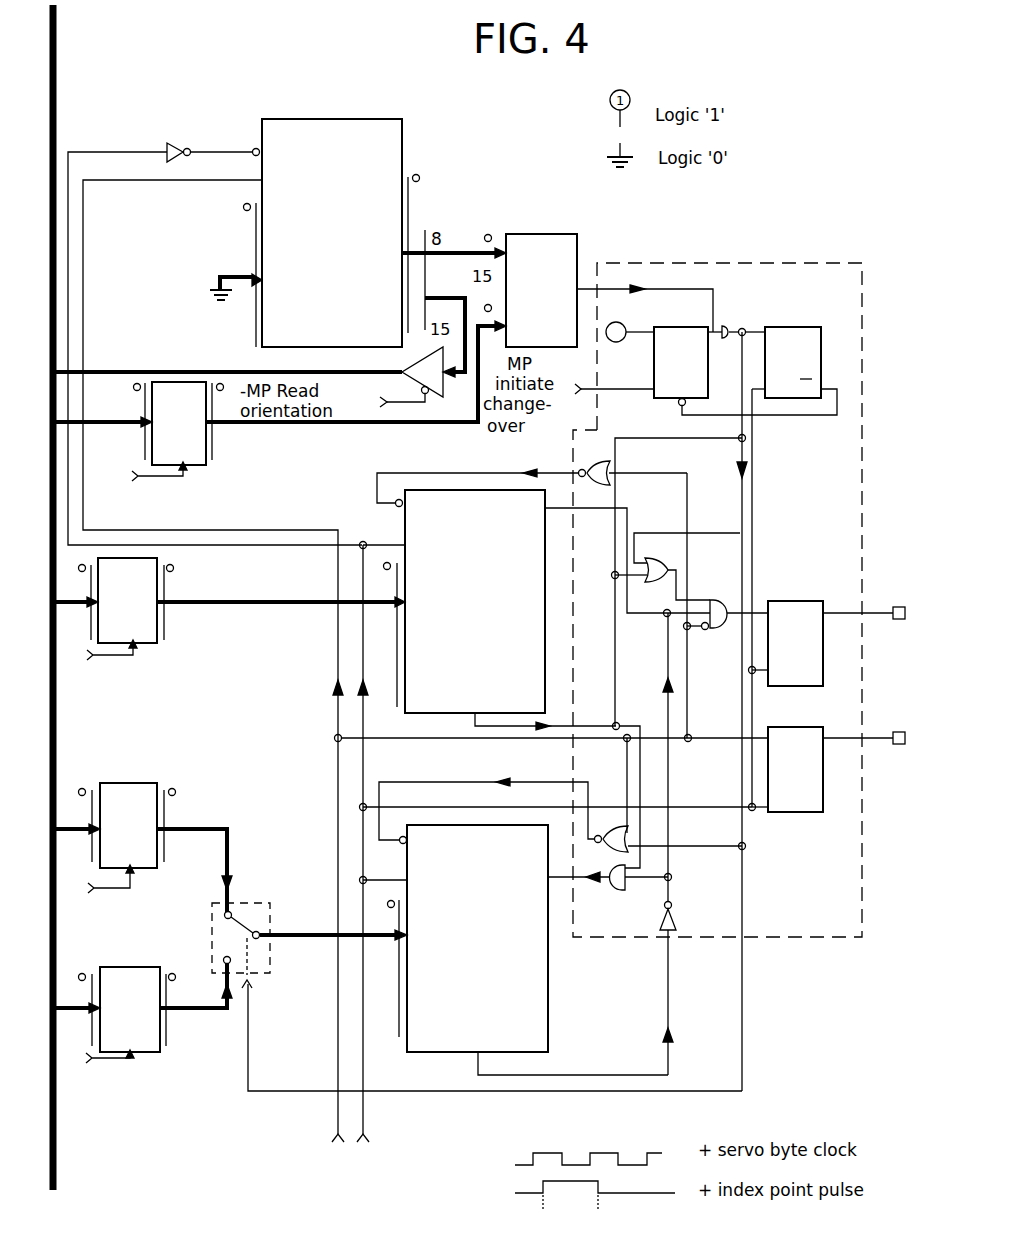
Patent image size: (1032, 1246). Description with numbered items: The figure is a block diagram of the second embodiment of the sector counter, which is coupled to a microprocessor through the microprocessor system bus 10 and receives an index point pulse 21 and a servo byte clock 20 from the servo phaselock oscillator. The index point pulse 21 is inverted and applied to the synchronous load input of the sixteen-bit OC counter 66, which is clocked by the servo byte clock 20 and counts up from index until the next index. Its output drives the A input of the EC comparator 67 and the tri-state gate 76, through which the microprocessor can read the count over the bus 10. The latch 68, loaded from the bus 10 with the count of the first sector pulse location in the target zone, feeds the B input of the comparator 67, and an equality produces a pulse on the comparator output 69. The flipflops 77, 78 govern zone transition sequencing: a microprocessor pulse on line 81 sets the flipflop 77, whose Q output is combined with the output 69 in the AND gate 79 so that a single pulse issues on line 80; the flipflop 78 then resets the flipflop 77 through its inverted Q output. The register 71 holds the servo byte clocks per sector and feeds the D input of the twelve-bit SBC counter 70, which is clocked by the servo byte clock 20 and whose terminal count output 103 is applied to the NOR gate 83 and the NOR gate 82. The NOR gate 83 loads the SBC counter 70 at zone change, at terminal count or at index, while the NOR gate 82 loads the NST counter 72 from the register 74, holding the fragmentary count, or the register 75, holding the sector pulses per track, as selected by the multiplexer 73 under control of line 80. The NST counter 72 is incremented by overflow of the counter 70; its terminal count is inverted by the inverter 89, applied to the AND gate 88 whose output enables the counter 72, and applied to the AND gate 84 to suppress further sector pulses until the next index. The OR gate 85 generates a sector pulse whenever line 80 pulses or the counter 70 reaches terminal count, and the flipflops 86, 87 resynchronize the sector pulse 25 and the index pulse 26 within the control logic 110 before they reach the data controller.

The microprocessor system bus 10 is at (57, 148).
The servo byte clock 20 is at (83, 292).
The index point pulse 21 is at (337, 1057).
The sector pulse 25 is at (893, 618).
The index pulse 26 is at (893, 743).
The OC counter 66 is at (372, 119).
The EC comparator 67 is at (540, 234).
The latch 68 is at (207, 466).
The comparator output 69 is at (668, 289).
The SBC counter 70 is at (545, 603).
The register 71 is at (140, 557).
The NST counter 72 is at (549, 848).
The multiplexer 73 is at (270, 903).
The register 74 is at (125, 783).
The register 75 is at (135, 967).
The tri-state gate 76 is at (436, 392).
The flipflop 77 is at (672, 327).
The flipflop 78 is at (805, 327).
The AND gate 79 is at (728, 327).
The line 80 is at (744, 427).
The line 81 is at (603, 389).
The NOR gate 82 is at (606, 826).
The NOR gate 83 is at (590, 460).
The AND gate 84 is at (715, 600).
The OR gate 85 is at (655, 557).
The flipflop 86 is at (790, 601).
The flipflop 87 is at (790, 812).
The AND gate 88 is at (613, 891).
The inverter 89 is at (676, 922).
The terminal count output 103 is at (573, 726).
The control logic 110 is at (800, 263).